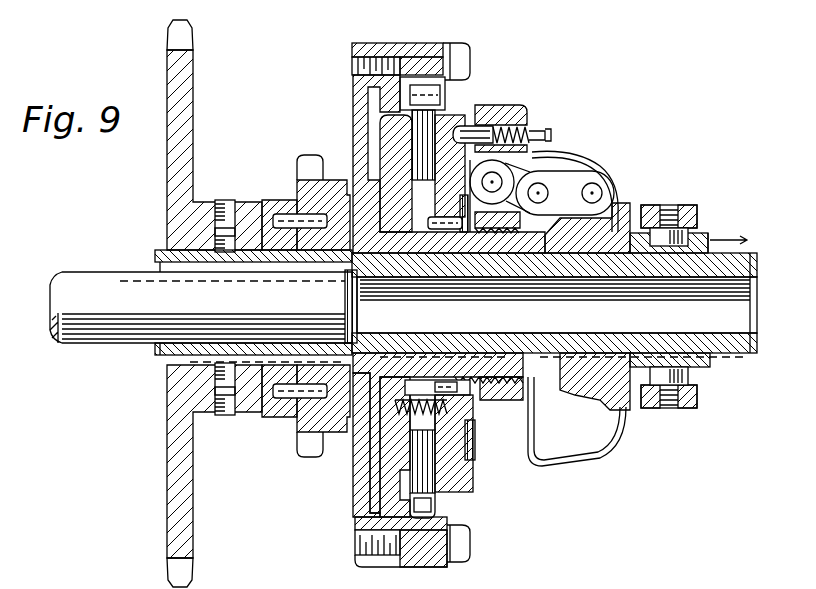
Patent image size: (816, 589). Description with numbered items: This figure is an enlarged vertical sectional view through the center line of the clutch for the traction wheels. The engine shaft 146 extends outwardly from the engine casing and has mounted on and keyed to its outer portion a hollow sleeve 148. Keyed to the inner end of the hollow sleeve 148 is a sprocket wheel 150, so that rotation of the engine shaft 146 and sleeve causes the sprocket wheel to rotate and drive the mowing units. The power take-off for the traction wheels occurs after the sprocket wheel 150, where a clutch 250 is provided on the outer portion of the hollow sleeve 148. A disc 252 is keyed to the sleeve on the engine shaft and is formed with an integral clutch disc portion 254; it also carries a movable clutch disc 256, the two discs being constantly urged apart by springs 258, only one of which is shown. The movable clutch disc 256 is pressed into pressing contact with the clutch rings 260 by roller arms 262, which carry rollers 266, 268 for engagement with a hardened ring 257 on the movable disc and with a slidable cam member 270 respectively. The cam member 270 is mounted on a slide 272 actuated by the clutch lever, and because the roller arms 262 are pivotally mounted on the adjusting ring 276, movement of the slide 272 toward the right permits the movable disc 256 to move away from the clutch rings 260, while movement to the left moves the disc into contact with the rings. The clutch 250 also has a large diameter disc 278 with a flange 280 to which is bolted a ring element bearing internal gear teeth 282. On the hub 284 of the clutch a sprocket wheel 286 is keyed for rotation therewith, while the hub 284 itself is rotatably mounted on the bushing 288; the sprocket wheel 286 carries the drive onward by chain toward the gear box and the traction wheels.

The engine shaft 146 is at (95, 278).
The hollow sleeve 148 is at (554, 305).
The sprocket wheel 150 is at (193, 148).
The clutch 250 is at (403, 39).
The disc 252 is at (387, 377).
The integral clutch disc portion 254 is at (390, 152).
The movable clutch disc 256 is at (462, 100).
The hardened ring 257 is at (527, 130).
The springs 258 is at (430, 428).
The clutch rings 260 is at (458, 493).
The roller arms 262 is at (565, 160).
The roller 266 is at (543, 150).
The roller 268 is at (605, 180).
The slidable cam member 270 is at (632, 207).
The slide 272 is at (700, 230).
The adjusting ring 276 is at (505, 397).
The large diameter disc 278 is at (353, 113).
The flange 280 is at (356, 45).
The ring element bearing internal gear teeth 282 is at (447, 100).
The hub 284 is at (303, 388).
The sprocket wheel 286 is at (300, 452).
The bushing 288 is at (283, 378).